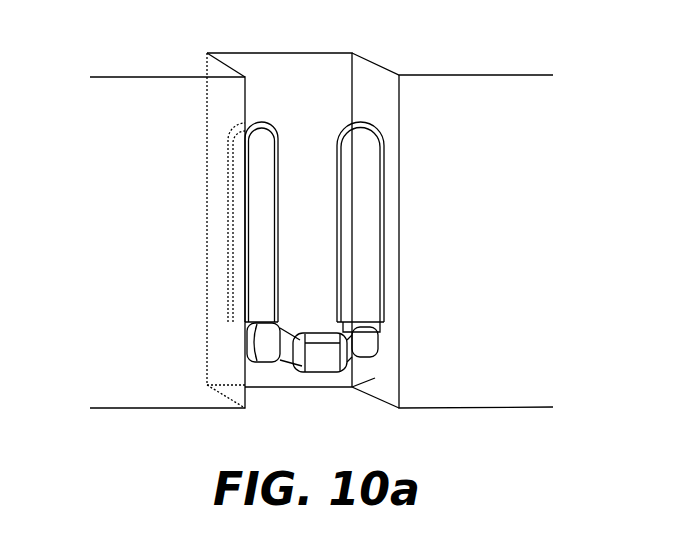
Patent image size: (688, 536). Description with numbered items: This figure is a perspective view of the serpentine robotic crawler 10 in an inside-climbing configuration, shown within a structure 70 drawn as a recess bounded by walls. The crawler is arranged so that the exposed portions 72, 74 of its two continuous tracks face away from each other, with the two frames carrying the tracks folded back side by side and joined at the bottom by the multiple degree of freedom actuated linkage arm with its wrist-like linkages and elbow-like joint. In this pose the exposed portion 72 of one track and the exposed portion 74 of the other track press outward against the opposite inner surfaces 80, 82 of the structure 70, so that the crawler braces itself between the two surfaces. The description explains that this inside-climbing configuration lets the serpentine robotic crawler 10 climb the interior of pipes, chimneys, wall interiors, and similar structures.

The serpentine robotic crawler 10 is at (308, 117).
The structure 70 is at (212, 63).
The exposed portion of continuous track 72 is at (232, 238).
The exposed portion of continuous track 74 is at (386, 245).
The inner surface 80 is at (250, 383).
The inner surface 82 is at (356, 383).